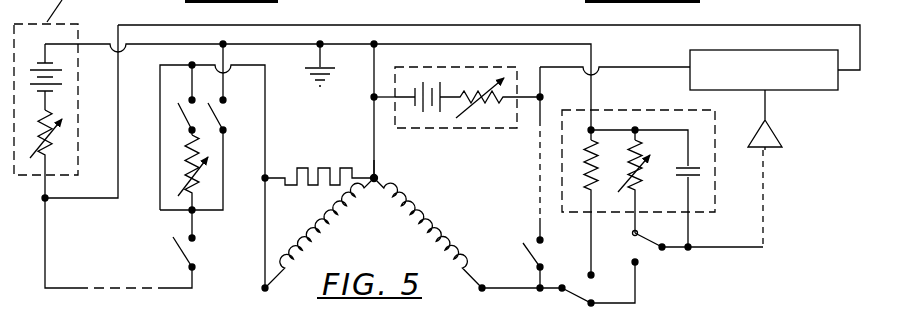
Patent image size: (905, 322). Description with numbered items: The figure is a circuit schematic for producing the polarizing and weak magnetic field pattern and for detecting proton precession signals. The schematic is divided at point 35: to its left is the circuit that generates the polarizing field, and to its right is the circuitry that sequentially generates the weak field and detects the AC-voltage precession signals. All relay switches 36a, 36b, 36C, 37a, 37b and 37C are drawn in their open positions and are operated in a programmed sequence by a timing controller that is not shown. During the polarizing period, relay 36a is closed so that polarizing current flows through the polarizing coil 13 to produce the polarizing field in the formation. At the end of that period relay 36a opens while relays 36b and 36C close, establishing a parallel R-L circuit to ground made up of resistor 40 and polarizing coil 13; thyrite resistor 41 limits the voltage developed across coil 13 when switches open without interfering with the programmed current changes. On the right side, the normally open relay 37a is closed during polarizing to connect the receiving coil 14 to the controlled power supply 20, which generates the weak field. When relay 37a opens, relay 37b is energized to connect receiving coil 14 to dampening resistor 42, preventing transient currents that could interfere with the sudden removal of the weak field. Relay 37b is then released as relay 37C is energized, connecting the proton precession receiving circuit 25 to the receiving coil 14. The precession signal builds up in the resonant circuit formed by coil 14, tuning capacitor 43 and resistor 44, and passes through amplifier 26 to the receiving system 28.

The polarizing coil 13 is at (330, 230).
The receiving coil 14 is at (430, 240).
The controlled power supply 20 is at (490, 137).
The receiving circuit 25 is at (668, 110).
The amplifier 26 is at (775, 135).
The receiving system 28 is at (805, 90).
The point 35 is at (374, 178).
The relay switch 36a is at (178, 253).
The relay switch 36b is at (183, 112).
The relay switch 36C is at (218, 118).
The relay switch 37a is at (528, 253).
The relay switch 37b is at (575, 297).
The relay switch 37C is at (645, 243).
The resistor 40 is at (197, 190).
The thyrite resistor 41 is at (323, 168).
The dampening resistor 42 is at (583, 178).
The tuning capacitor 43 is at (700, 172).
The resistor 44 is at (640, 190).